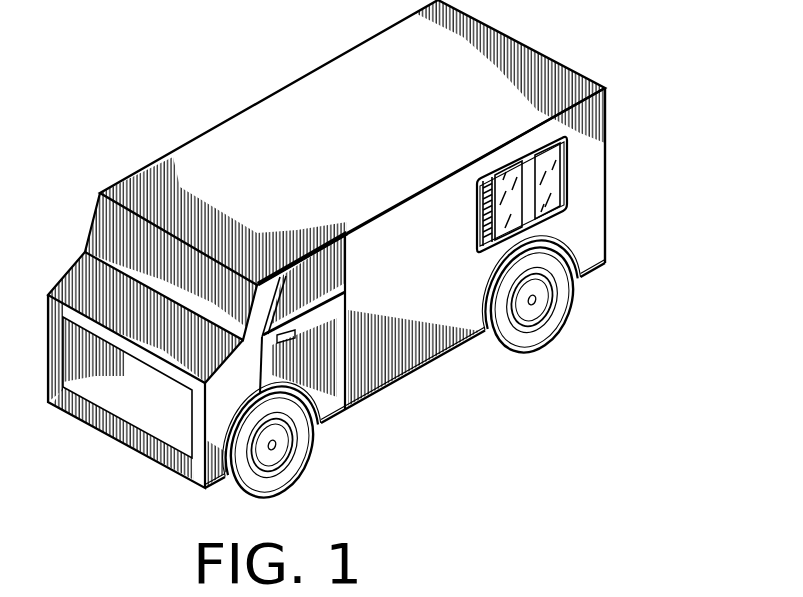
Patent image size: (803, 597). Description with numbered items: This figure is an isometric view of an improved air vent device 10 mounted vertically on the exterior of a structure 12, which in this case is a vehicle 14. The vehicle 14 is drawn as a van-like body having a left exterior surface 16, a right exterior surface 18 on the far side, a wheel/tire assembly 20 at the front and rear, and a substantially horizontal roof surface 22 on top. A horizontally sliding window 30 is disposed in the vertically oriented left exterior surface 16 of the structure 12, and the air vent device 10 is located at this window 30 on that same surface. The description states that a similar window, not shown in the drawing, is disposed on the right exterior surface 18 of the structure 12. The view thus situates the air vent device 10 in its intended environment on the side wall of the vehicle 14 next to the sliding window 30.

The air vent device 10 is at (475, 195).
The structure 12 is at (613, 117).
The vehicle 14 is at (605, 150).
The left exterior surface 16 is at (583, 192).
The right exterior surface 18 is at (247, 110).
The wheel/tire assembly 20 is at (303, 457).
The roof surface 22 is at (483, 80).
The horizontally sliding window 30 is at (558, 213).